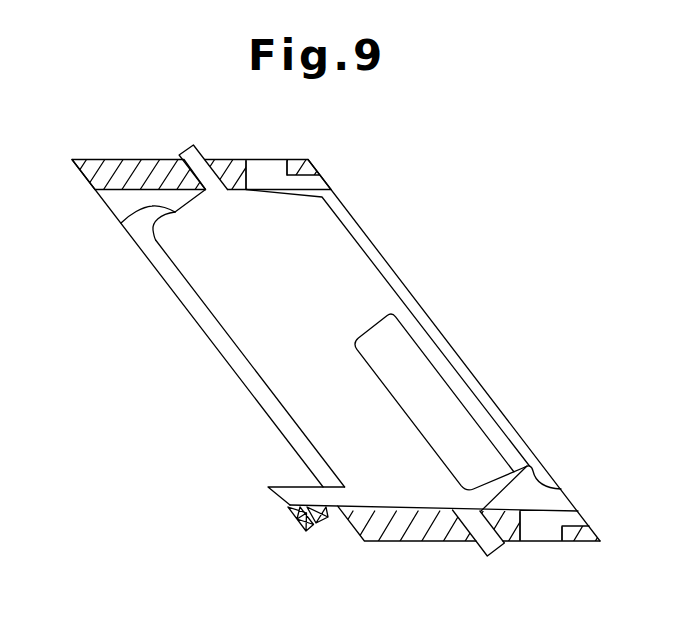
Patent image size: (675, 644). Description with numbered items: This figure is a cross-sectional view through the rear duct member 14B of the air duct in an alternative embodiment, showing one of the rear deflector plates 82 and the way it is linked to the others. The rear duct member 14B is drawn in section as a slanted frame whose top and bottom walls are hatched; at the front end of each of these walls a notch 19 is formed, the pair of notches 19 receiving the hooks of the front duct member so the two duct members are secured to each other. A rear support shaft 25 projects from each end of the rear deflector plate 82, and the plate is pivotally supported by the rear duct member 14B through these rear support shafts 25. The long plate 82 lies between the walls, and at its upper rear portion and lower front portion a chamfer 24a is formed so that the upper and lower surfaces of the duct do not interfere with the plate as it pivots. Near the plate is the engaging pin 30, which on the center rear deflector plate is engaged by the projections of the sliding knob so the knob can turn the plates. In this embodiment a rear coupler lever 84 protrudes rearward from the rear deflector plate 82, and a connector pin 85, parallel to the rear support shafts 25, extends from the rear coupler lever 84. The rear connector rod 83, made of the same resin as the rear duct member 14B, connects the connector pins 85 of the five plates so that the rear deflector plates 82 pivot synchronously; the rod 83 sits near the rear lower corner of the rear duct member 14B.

The rear duct member 14B is at (108, 159).
The rear support shaft 25 is at (186, 151).
The notch 19 is at (249, 168).
The chamfer 24a is at (122, 224).
The rear deflector plate 82 is at (250, 327).
The engaging pin 30 is at (465, 393).
The rear coupler lever 84 is at (293, 484).
The rear connector rod 83 is at (290, 510).
The connector pin 85 is at (310, 530).